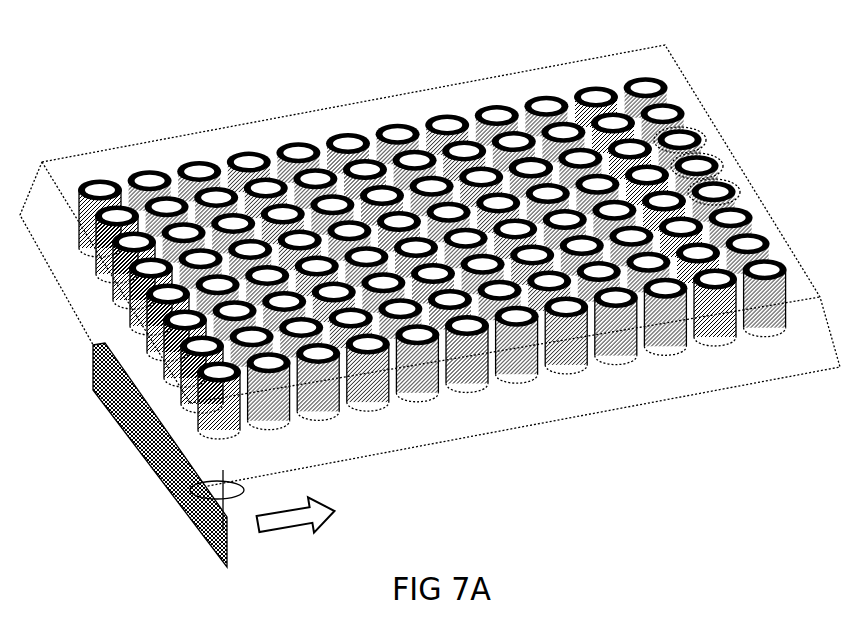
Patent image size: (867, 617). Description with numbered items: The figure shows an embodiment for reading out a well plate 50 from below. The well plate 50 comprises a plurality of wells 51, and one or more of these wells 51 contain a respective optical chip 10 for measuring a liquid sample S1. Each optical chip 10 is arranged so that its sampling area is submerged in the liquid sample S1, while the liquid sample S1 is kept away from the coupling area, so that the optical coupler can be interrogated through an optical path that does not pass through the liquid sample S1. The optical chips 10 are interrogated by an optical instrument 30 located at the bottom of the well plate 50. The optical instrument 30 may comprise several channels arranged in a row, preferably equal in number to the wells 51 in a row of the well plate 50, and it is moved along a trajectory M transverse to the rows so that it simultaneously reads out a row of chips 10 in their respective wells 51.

The well plate 50 is at (110, 96).
The optical chip 10 is at (585, 362).
The well 51 is at (721, 186).
The liquid sample S1 is at (528, 162).
The optical instrument 30 is at (120, 437).
The trajectory M is at (296, 529).